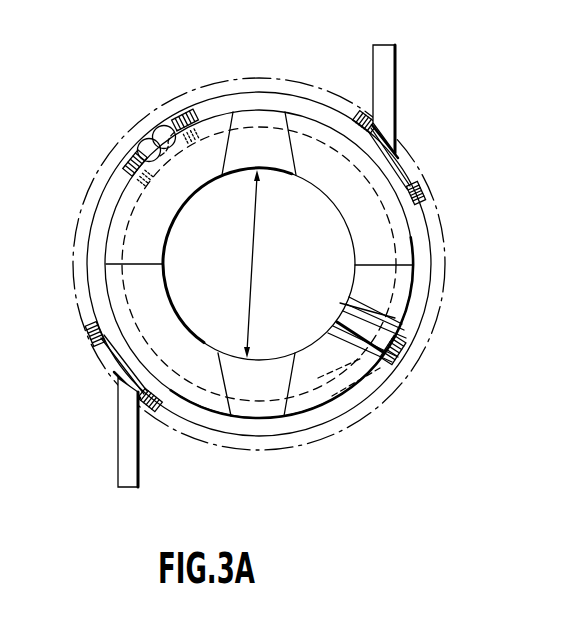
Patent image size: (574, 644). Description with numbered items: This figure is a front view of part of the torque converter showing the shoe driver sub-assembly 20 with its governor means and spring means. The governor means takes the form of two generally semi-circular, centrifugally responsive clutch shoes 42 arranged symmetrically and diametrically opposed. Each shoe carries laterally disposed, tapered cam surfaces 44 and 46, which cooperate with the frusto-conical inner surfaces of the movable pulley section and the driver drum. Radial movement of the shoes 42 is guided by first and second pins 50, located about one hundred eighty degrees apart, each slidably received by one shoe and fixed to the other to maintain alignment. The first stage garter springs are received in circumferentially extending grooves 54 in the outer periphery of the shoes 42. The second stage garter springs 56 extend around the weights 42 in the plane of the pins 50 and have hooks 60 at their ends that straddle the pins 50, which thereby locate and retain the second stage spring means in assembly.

The shoe driver sub-assembly 20 is at (251, 71).
The clutch shoes 42 is at (252, 266).
The tapered cam surface 44 is at (264, 154).
The tapered cam surface 46 is at (165, 203).
The pins 50 is at (396, 74).
The circumferentially extending grooves 54 is at (398, 244).
The garter springs 56 is at (365, 116).
The hooks 60 is at (406, 167).